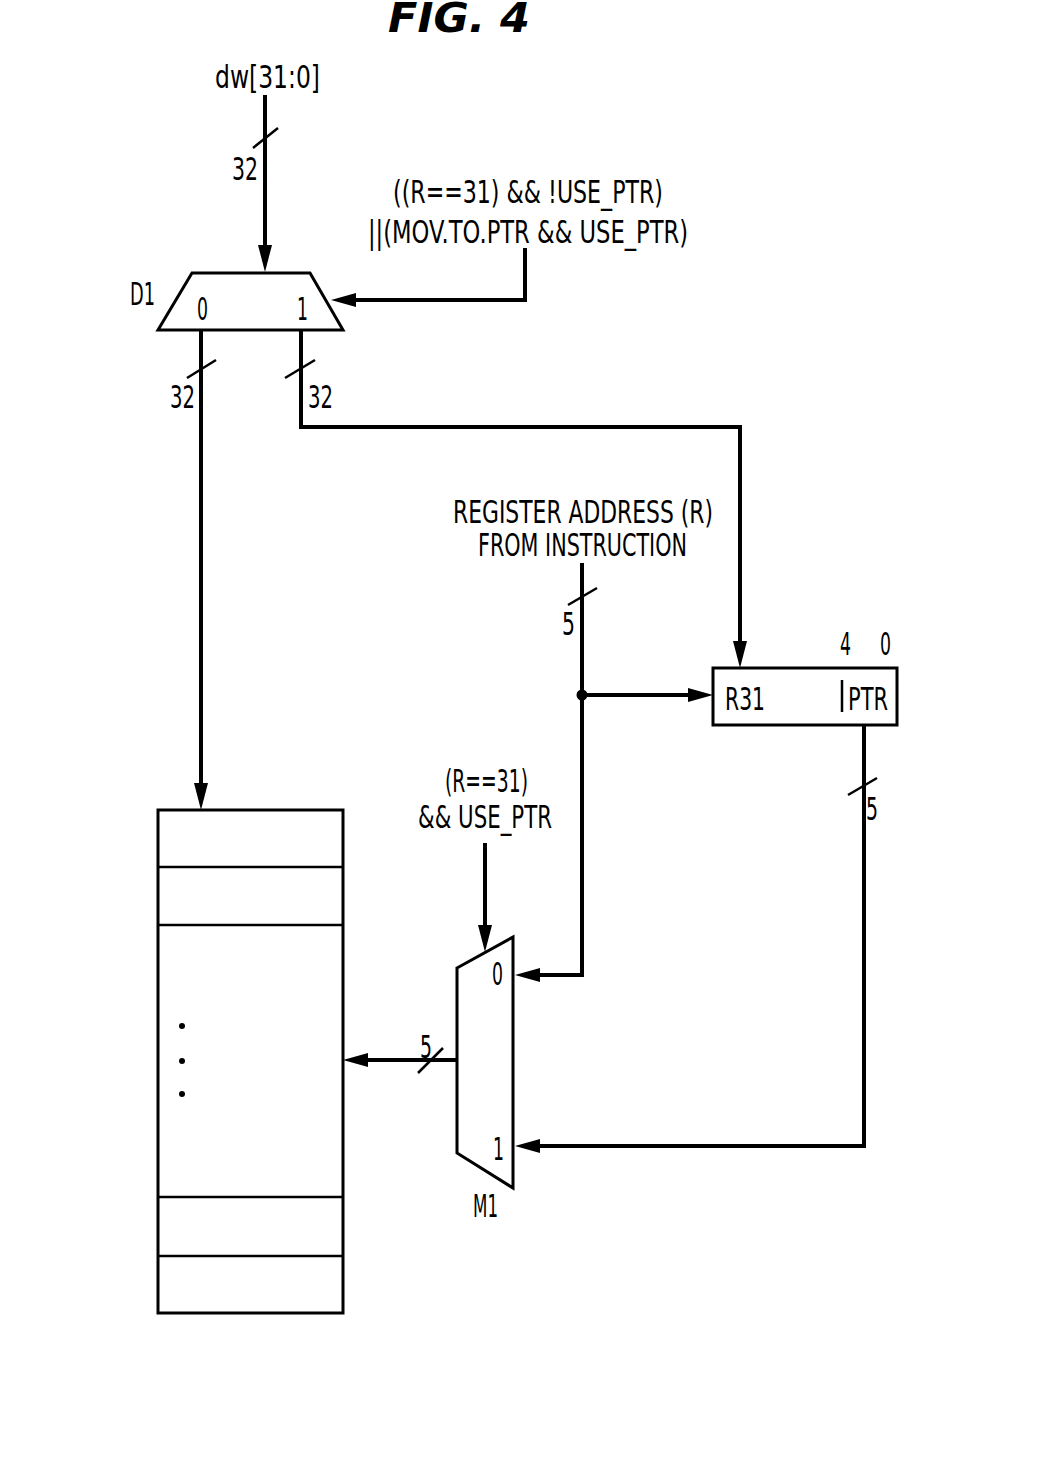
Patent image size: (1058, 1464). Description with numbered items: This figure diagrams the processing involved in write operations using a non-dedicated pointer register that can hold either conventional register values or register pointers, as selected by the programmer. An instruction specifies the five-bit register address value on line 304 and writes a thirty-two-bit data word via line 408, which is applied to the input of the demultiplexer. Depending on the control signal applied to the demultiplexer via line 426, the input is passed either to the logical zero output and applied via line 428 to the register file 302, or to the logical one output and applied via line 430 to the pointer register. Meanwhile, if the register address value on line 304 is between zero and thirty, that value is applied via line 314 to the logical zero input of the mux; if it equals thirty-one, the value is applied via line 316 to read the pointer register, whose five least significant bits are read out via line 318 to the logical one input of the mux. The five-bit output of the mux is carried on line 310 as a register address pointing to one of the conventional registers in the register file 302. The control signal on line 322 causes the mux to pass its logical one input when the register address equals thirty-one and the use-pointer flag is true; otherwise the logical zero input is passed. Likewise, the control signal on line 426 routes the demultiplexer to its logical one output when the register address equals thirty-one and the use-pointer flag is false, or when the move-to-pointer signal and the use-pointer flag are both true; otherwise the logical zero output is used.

The register file 302 is at (148, 990).
The line 304 is at (582, 654).
The line 310 is at (390, 1062).
The line 314 is at (582, 833).
The line 316 is at (627, 697).
The line 318 is at (864, 970).
The line 322 is at (480, 900).
The line 408 is at (266, 221).
The line 426 is at (440, 303).
The line 428 is at (201, 600).
The line 430 is at (635, 427).